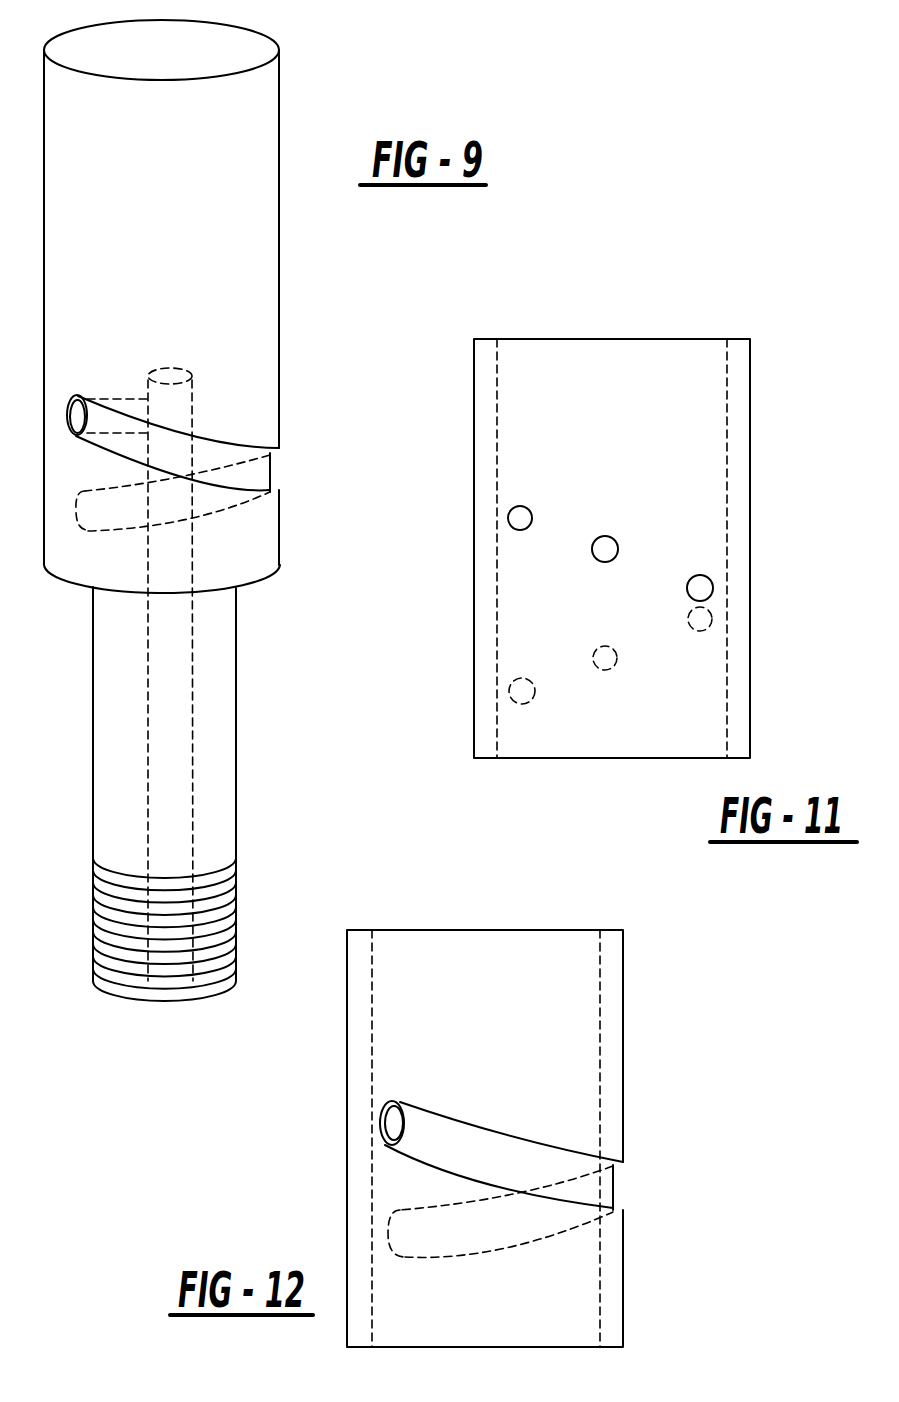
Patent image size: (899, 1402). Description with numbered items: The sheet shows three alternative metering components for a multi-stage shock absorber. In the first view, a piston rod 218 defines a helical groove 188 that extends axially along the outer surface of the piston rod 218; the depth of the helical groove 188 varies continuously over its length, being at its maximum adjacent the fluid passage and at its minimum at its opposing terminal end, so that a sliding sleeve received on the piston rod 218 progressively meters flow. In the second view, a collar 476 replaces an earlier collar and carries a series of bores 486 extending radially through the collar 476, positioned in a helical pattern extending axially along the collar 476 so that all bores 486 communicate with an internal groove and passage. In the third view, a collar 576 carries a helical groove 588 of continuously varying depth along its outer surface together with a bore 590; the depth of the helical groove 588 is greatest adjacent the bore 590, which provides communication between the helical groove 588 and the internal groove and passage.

In FIG. 9, the piston rod 218 is at (165, 188).
In FIG. 9, the helical groove 188 is at (208, 452).
In FIG. 11, the collar 476 is at (659, 347).
In FIG. 11, the bores 486 is at (615, 545).
In FIG. 12, the collar 576 is at (498, 937).
In FIG. 12, the helical groove 588 is at (457, 1133).
In FIG. 12, the bore 590 is at (392, 1119).